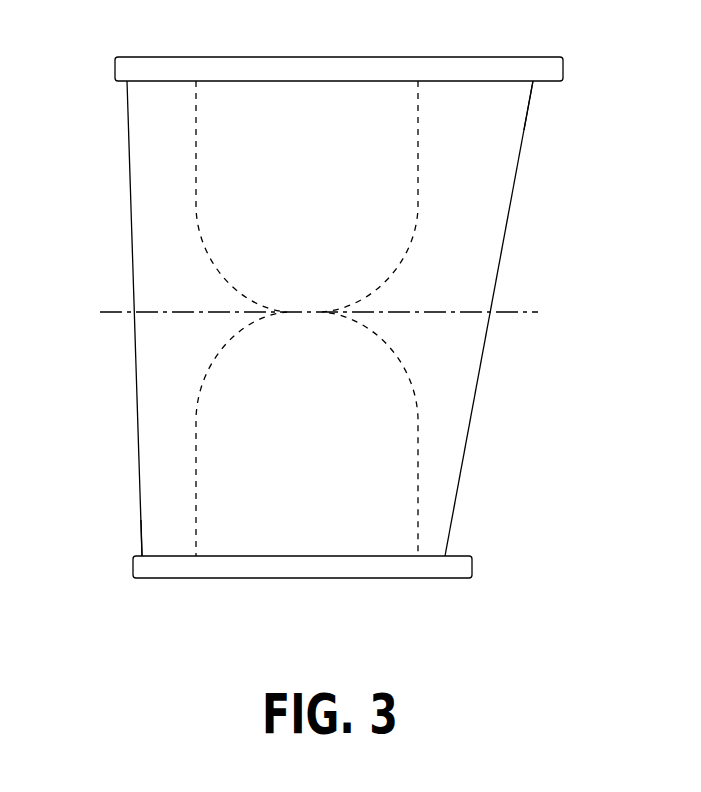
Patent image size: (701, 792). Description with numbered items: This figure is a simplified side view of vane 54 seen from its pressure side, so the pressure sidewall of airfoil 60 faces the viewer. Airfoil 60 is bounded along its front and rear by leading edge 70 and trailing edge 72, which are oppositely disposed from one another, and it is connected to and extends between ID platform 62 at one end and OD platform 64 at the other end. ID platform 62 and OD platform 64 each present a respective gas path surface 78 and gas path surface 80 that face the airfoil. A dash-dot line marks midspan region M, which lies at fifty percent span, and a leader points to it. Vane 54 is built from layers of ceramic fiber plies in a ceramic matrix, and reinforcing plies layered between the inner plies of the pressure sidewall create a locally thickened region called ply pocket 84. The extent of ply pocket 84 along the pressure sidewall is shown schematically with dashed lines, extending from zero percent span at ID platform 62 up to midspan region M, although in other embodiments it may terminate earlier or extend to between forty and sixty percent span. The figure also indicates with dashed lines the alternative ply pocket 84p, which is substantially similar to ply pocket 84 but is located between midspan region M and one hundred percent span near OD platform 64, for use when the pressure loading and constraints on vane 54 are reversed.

The vane 54 is at (78, 261).
The airfoil 60 is at (338, 318).
The ID platform 62 is at (490, 568).
The OD platform 64 is at (580, 68).
The leading edge 70 is at (517, 174).
The trailing edge 72 is at (136, 398).
The gas path surface 78 is at (160, 544).
The gas path surface 80 is at (514, 95).
The ply pocket 84 is at (418, 480).
The ply pocket 84p is at (192, 190).
The midspan region M is at (505, 314).